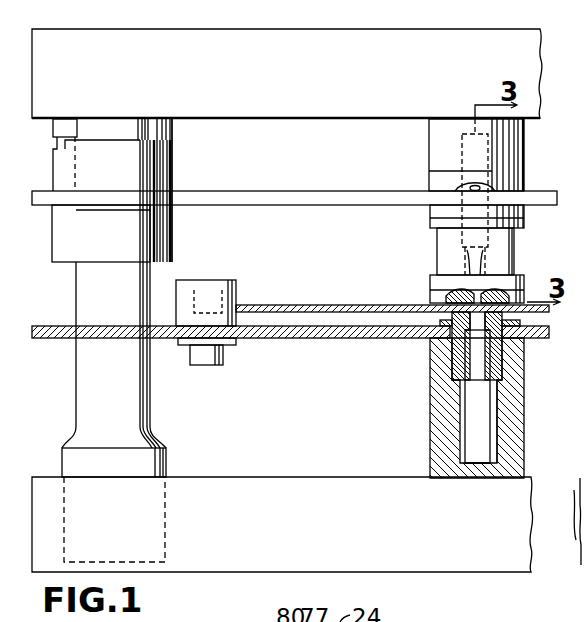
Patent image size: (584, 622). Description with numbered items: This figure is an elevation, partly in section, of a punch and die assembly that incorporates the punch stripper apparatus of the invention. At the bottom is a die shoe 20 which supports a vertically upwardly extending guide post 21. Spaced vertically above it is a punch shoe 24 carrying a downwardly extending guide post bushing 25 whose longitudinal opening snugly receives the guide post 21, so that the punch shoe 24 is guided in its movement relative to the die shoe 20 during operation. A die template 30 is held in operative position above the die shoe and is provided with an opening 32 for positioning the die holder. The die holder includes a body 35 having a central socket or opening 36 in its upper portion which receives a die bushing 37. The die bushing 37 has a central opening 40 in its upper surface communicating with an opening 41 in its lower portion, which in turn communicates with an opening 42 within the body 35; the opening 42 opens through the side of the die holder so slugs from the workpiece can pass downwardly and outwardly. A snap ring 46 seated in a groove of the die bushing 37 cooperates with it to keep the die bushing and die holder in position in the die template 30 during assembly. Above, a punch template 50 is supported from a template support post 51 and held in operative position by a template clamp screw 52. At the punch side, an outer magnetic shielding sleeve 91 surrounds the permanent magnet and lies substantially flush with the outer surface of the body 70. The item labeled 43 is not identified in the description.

The die shoe 20 is at (478, 557).
The guide post 21 is at (143, 392).
The punch shoe 24 is at (440, 43).
The guide post bushing 25 is at (172, 228).
The die template 30 is at (300, 340).
The opening 32 is at (507, 337).
The body 35 is at (437, 413).
The central socket or opening 36 is at (500, 370).
The die bushing 37 is at (452, 365).
The central opening 40 is at (479, 348).
The opening 41 is at (479, 395).
The opening 42 is at (486, 432).
The inner sleeve 43 is at (450, 330).
The snap ring 46 is at (515, 318).
The punch template 50 is at (290, 191).
The template support post 51 is at (172, 161).
The template clamp screw 52 is at (107, 211).
The body 70 is at (520, 178).
The outer magnetic shielding sleeve 91 is at (520, 133).